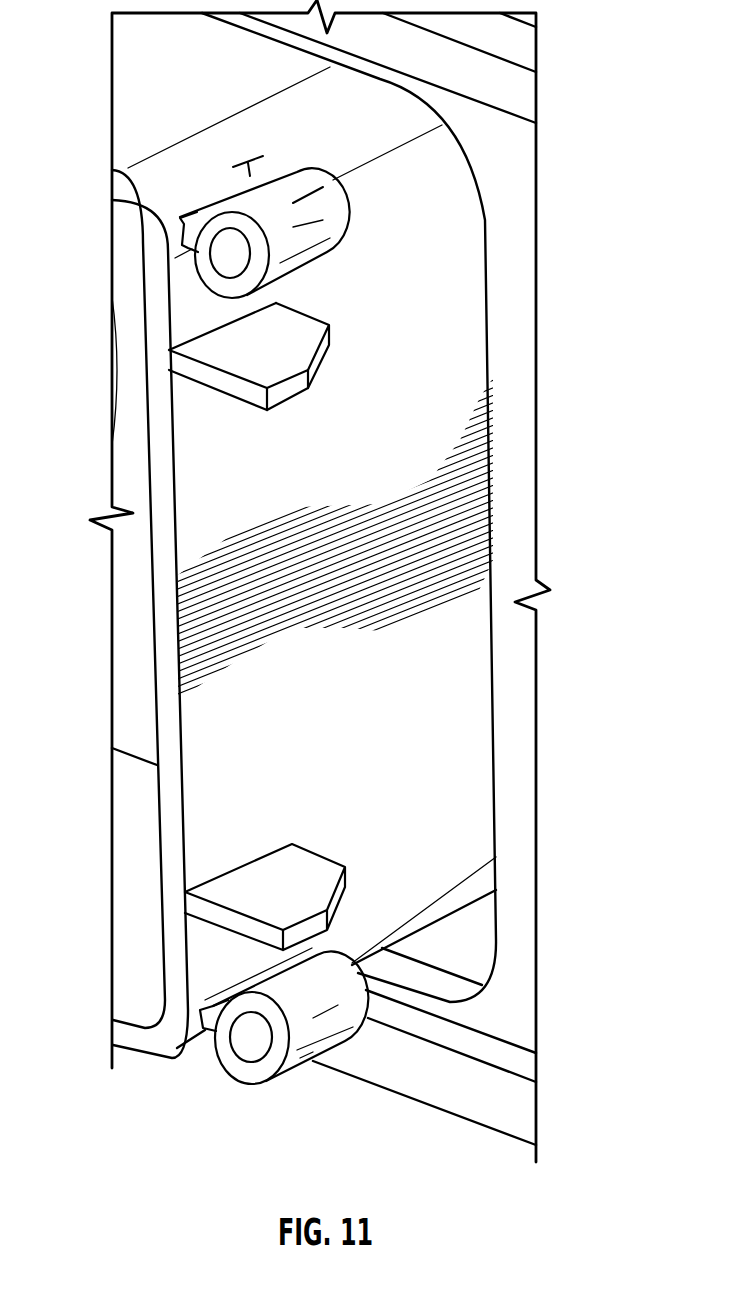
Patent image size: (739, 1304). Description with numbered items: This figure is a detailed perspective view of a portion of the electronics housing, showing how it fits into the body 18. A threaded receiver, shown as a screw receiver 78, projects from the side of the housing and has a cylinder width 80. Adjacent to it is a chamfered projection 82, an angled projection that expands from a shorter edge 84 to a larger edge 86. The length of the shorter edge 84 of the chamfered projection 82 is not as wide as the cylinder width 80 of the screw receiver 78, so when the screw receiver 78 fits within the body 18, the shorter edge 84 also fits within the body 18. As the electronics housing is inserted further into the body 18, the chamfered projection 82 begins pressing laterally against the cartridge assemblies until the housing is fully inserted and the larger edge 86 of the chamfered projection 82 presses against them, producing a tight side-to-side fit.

The body 18 is at (517, 165).
The screw receiver 78 is at (225, 196).
The cylinder width 80 is at (297, 183).
The chamfered projection 82 is at (257, 353).
The shorter edge 84 is at (313, 307).
The larger edge 86 is at (223, 394).